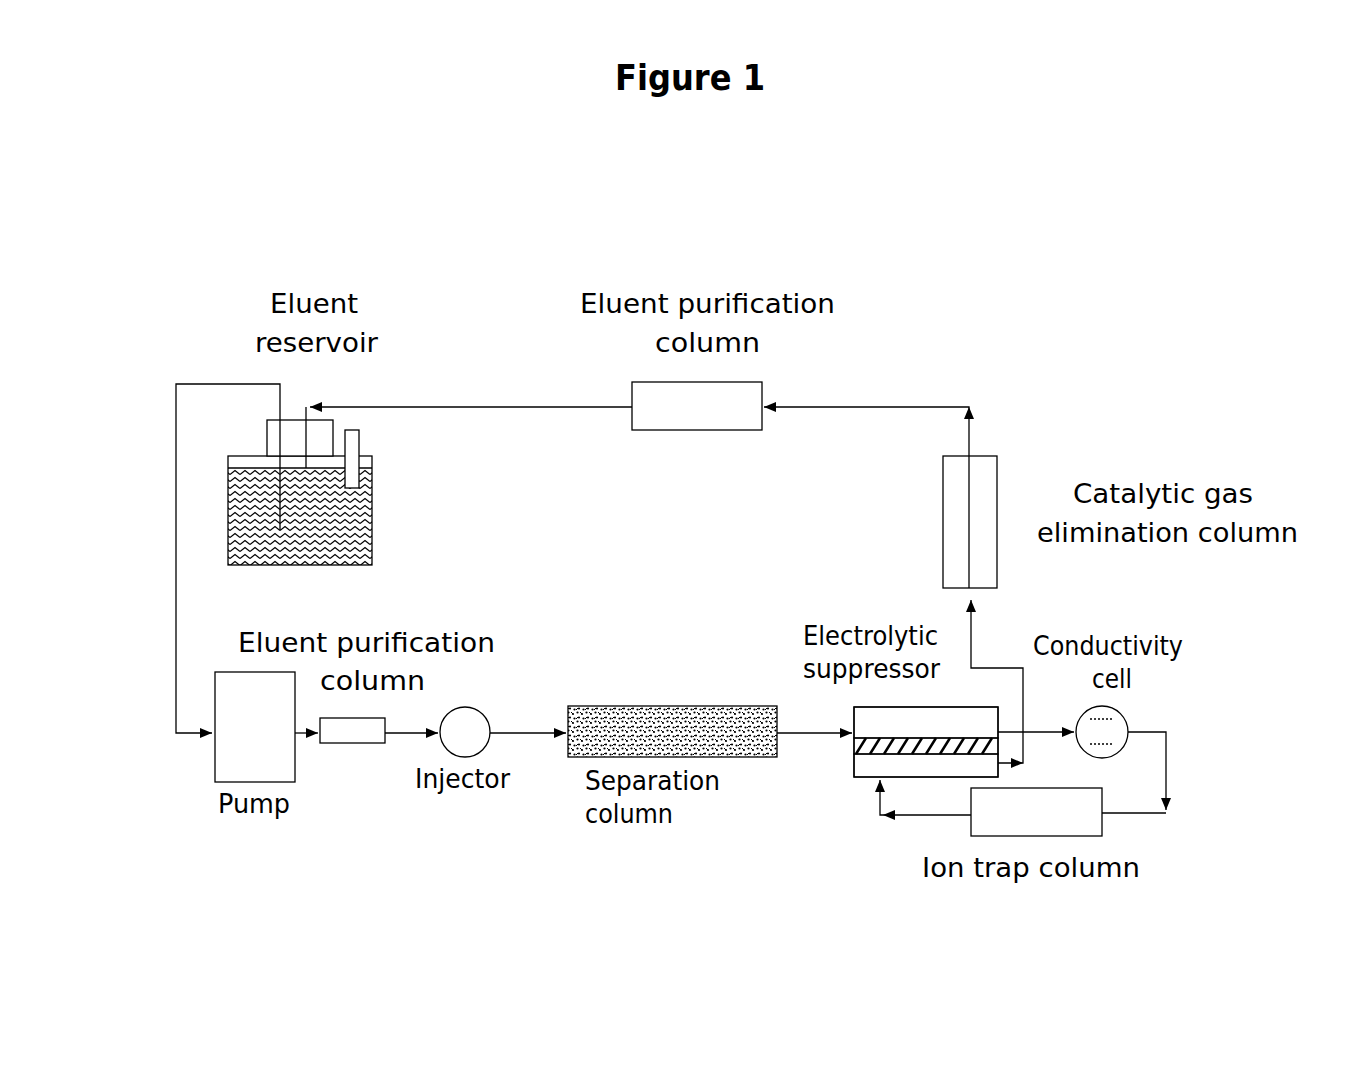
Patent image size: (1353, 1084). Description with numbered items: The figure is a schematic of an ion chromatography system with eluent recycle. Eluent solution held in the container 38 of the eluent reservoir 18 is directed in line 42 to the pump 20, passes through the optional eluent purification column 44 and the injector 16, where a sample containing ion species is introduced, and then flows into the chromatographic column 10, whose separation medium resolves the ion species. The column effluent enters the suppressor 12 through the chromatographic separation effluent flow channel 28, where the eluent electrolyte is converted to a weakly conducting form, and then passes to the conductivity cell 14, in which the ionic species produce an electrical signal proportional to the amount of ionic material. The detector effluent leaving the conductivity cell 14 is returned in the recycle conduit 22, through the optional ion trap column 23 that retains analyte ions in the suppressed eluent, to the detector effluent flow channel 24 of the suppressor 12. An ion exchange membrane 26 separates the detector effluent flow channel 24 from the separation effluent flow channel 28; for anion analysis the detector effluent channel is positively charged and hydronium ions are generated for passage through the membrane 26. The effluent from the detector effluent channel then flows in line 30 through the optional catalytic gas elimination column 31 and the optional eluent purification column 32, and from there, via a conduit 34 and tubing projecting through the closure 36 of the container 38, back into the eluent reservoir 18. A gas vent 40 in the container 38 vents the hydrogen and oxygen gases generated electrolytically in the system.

The chromatographic column 10 is at (620, 706).
The suppressor 12 is at (853, 760).
The conductivity cell 14 is at (1122, 711).
The injector 16 is at (465, 707).
The eluent reservoir 18 is at (372, 532).
The pump 20 is at (215, 770).
The recycle conduit 22 is at (1167, 760).
The ion trap column 23 is at (1102, 824).
The detector effluent flow channel 24 is at (918, 758).
The ion exchange membrane 26 is at (980, 740).
The chromatographic separation effluent flow channel 28 is at (858, 713).
The line 30 is at (915, 410).
The catalytic gas elimination column 31 is at (943, 525).
The eluent purification column 32 is at (683, 432).
The conduit to eluent reservoir 34 is at (553, 408).
The closure 36 is at (245, 456).
The container 38 is at (266, 565).
The gas vent 40 is at (360, 432).
The line 42 is at (176, 488).
The eluent purification column 44 is at (382, 752).